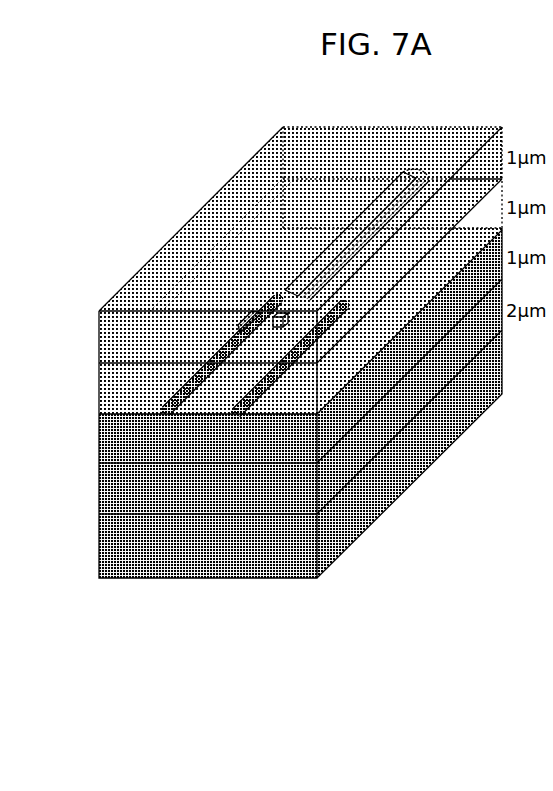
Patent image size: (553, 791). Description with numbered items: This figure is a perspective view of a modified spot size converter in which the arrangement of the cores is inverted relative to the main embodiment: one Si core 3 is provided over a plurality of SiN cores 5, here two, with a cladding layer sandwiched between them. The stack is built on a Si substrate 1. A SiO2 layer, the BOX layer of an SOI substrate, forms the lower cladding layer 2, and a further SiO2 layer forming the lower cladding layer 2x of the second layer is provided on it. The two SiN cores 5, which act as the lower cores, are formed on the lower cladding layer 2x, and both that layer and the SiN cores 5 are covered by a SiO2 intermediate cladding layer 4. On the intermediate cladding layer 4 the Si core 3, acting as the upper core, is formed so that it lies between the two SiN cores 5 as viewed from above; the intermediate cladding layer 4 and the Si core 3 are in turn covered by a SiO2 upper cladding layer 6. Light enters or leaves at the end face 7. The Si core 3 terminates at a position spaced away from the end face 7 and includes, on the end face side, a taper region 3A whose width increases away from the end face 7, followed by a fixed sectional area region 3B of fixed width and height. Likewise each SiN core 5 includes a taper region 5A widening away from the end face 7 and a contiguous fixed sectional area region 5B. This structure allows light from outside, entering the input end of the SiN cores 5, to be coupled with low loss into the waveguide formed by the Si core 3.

The substrate 1 is at (112, 547).
The lower cladding layer 2 is at (113, 494).
The lower cladding layer of the second layer 2x is at (115, 440).
The Si core 3 is at (362, 217).
The taper region 3A is at (305, 290).
The fixed sectional area region 3B is at (388, 199).
The intermediate cladding layer 4 is at (115, 400).
The SiN cores 5 is at (229, 343).
The taper region 5A is at (185, 387).
The fixed sectional area region 5B is at (252, 316).
The upper cladding layer 6 is at (112, 336).
The end face 7 is at (141, 345).